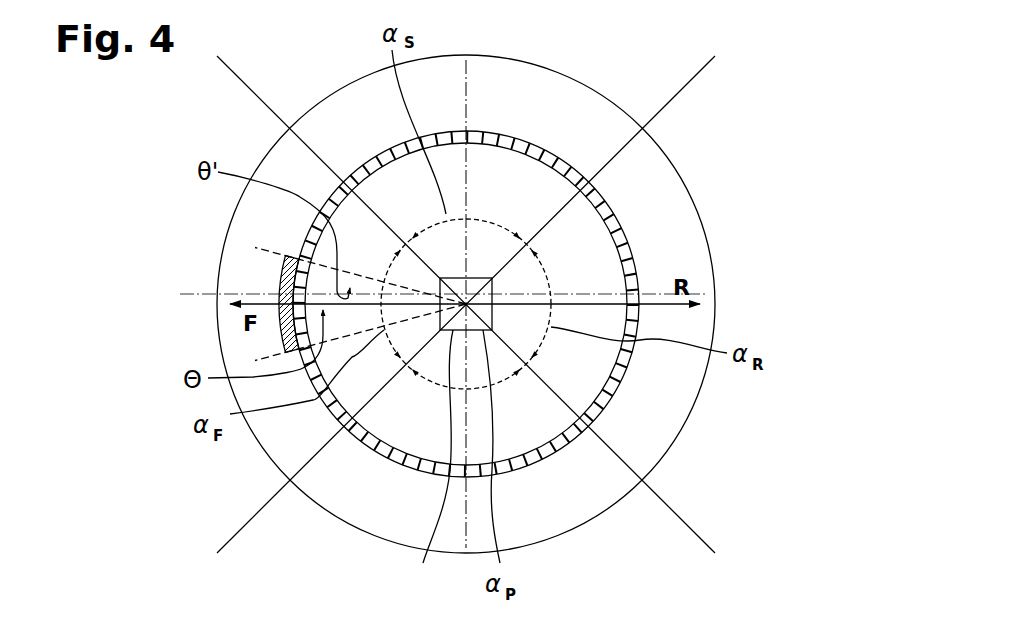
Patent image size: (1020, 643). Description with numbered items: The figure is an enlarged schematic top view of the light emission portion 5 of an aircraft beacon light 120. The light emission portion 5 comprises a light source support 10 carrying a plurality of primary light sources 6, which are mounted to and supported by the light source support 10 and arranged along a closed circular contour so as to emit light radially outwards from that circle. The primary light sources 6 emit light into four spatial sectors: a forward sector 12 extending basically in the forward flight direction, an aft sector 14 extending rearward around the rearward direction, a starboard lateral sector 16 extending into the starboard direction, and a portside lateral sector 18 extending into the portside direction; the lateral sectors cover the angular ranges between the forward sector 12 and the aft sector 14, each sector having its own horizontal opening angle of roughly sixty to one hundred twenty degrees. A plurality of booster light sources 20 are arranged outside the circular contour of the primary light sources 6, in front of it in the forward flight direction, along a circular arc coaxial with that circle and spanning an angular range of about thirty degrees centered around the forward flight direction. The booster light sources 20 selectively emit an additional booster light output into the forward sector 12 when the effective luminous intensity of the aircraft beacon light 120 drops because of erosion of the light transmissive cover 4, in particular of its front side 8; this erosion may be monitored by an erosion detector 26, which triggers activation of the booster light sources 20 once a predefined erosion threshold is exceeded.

The light transmissive cover 4 is at (266, 162).
The light emission portion 5 is at (788, 92).
The primary light sources 6 is at (383, 143).
The front side of the light transmissive cover 8 is at (215, 270).
The light source support 10 is at (685, 252).
The forward sector 12 is at (193, 478).
The aft sector 14 is at (738, 480).
The starboard lateral sector 16 is at (633, 82).
The portside lateral sector 18 is at (383, 547).
The booster light sources 20 is at (268, 268).
The erosion detector 26 is at (466, 408).
The aircraft beacon light 120 is at (698, 177).